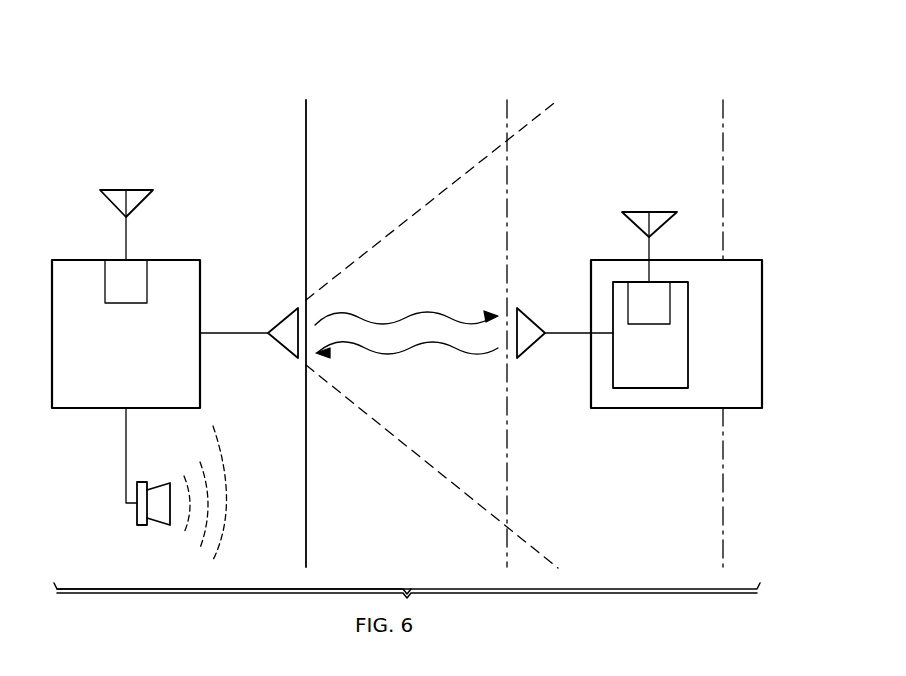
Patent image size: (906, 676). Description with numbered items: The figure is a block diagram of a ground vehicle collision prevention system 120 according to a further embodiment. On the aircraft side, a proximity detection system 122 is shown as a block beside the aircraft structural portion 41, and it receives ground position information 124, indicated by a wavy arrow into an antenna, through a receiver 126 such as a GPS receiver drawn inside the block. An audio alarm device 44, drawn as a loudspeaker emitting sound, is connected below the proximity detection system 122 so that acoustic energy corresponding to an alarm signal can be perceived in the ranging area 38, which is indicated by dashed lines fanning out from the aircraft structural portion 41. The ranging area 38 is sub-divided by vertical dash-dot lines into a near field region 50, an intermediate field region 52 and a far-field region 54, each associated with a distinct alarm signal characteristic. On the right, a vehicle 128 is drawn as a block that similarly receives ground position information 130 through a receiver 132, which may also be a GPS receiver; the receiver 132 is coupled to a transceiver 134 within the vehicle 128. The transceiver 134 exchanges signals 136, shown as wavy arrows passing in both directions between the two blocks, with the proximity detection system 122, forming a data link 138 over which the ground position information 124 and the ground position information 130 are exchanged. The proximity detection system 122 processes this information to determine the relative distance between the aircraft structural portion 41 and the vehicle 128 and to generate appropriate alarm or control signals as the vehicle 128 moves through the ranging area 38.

The ground vehicle collision prevention system 120 is at (196, 68).
The proximity detection system 122 is at (84, 259).
The ground position information 124 is at (125, 177).
The receiver 126 is at (125, 305).
The audio alarm device 44 is at (140, 527).
The aircraft structural portion 41 is at (306, 141).
The ranging area 38 is at (468, 168).
The near field region 50 is at (481, 452).
The intermediate field region 52 is at (626, 452).
The far-field region 54 is at (798, 452).
The signals 136 is at (423, 313).
The data link 138 is at (399, 358).
The vehicle 128 is at (762, 333).
The ground position information 130 is at (645, 95).
The receiver 132 is at (651, 325).
The transceiver 134 is at (681, 338).